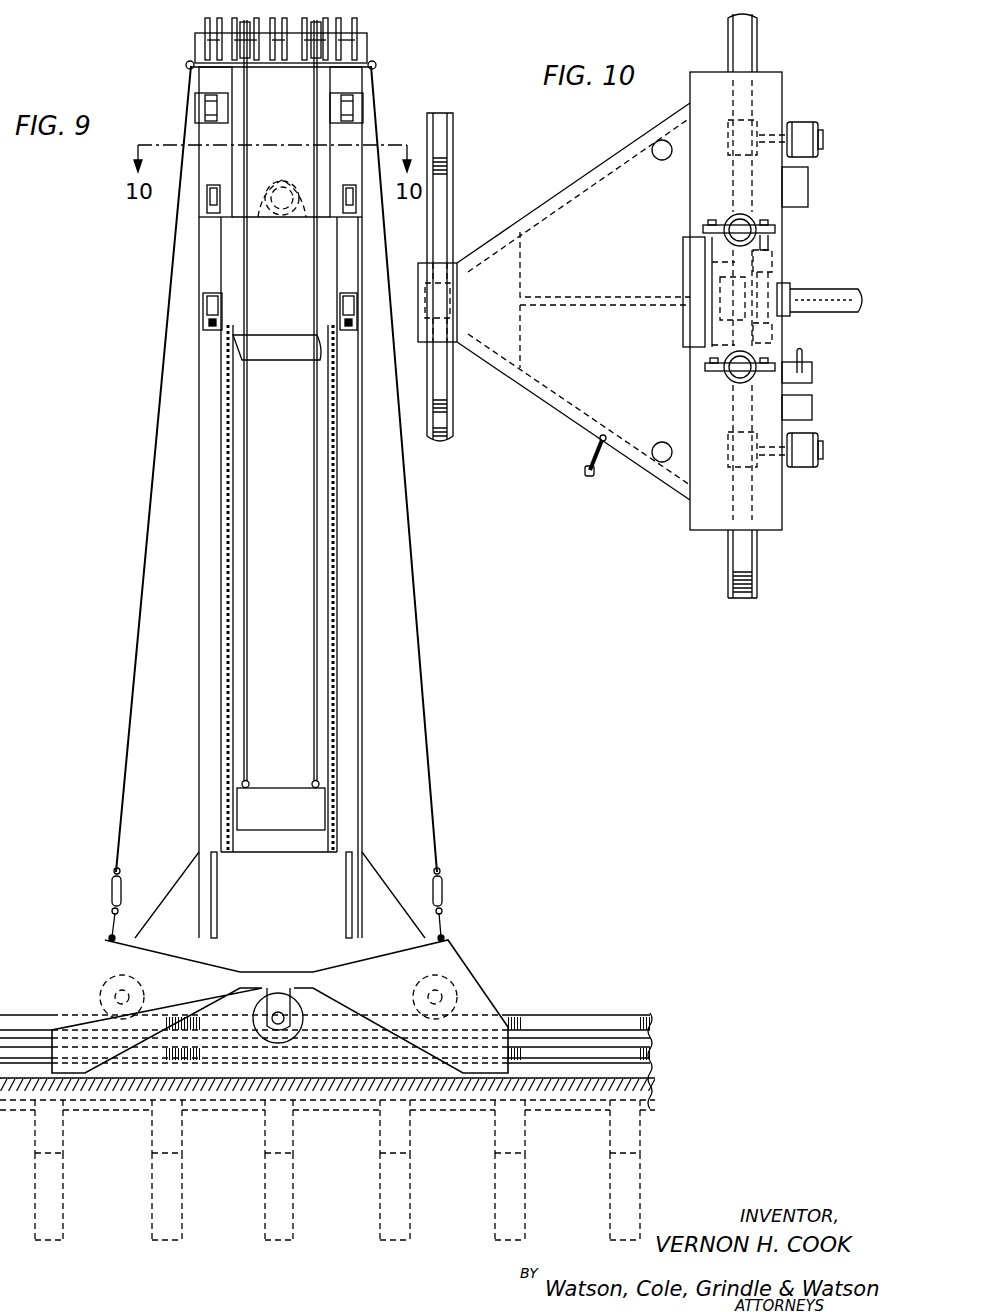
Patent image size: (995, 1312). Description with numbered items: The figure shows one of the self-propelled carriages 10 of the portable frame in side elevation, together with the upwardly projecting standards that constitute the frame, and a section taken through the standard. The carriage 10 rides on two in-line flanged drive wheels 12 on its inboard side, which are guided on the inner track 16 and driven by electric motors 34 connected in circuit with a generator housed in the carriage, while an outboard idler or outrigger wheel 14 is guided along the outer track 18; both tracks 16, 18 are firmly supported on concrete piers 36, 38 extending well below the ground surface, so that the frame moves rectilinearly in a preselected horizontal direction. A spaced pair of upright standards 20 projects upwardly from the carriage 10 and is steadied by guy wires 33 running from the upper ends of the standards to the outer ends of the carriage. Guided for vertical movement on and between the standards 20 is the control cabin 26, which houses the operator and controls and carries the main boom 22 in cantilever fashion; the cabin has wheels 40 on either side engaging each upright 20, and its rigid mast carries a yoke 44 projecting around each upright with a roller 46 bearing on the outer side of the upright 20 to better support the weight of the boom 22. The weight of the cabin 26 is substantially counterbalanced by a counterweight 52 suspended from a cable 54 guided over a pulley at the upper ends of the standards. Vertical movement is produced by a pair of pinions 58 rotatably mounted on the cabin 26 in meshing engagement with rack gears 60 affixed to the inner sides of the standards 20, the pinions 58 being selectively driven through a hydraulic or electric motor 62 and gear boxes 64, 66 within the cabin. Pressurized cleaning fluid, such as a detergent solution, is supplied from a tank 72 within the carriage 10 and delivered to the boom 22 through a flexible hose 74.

In FIG. 9, the self-propelled carriage 10 is at (460, 960).
In FIG. 10, the self-propelled carriage 10 is at (597, 168).
In FIG. 9, the flanged drive wheel 12 is at (144, 990).
In FIG. 9, the outboard idler wheel 14 is at (300, 1008).
In FIG. 10, the outboard idler wheel 14 is at (452, 303).
In FIG. 9, the inner track 16 is at (617, 1015).
In FIG. 10, the inner track 16 is at (745, 33).
In FIG. 9, the outer track 18 is at (641, 1040).
In FIG. 10, the outer track 18 is at (442, 188).
In FIG. 9, the upright standard 20 is at (202, 547).
In FIG. 10, the upright standard 20 is at (727, 218).
In FIG. 9, the main boom 22 is at (292, 182).
In FIG. 10, the main boom 22 is at (843, 297).
In FIG. 9, the control cabin 26 is at (288, 355).
In FIG. 9, the guy wire 33 is at (150, 508).
In FIG. 10, the electric motor 34 is at (805, 127).
In FIG. 9, the concrete pier 36 is at (462, 1132).
In FIG. 9, the concrete pier 38 is at (466, 1216).
In FIG. 9, the cabin wheel 40 is at (208, 330).
In FIG. 10, the cabin wheel 40 is at (710, 227).
In FIG. 9, the yoke 44 is at (196, 100).
In FIG. 9, the roller 46 is at (208, 104).
In FIG. 9, the counterweight 52 is at (294, 823).
In FIG. 9, the cable 54 is at (299, 671).
In FIG. 10, the pinion 58 is at (728, 260).
In FIG. 9, the rack gear 60 is at (229, 558).
In FIG. 10, the rack gear 60 is at (683, 250).
In FIG. 10, the hydraulic or electric motor 62 is at (720, 307).
In FIG. 10, the gear box 64 is at (777, 255).
In FIG. 10, the gear box 66 is at (793, 300).
In FIG. 10, the tank 72 is at (518, 347).
In FIG. 10, the flexible hose 74 is at (571, 460).